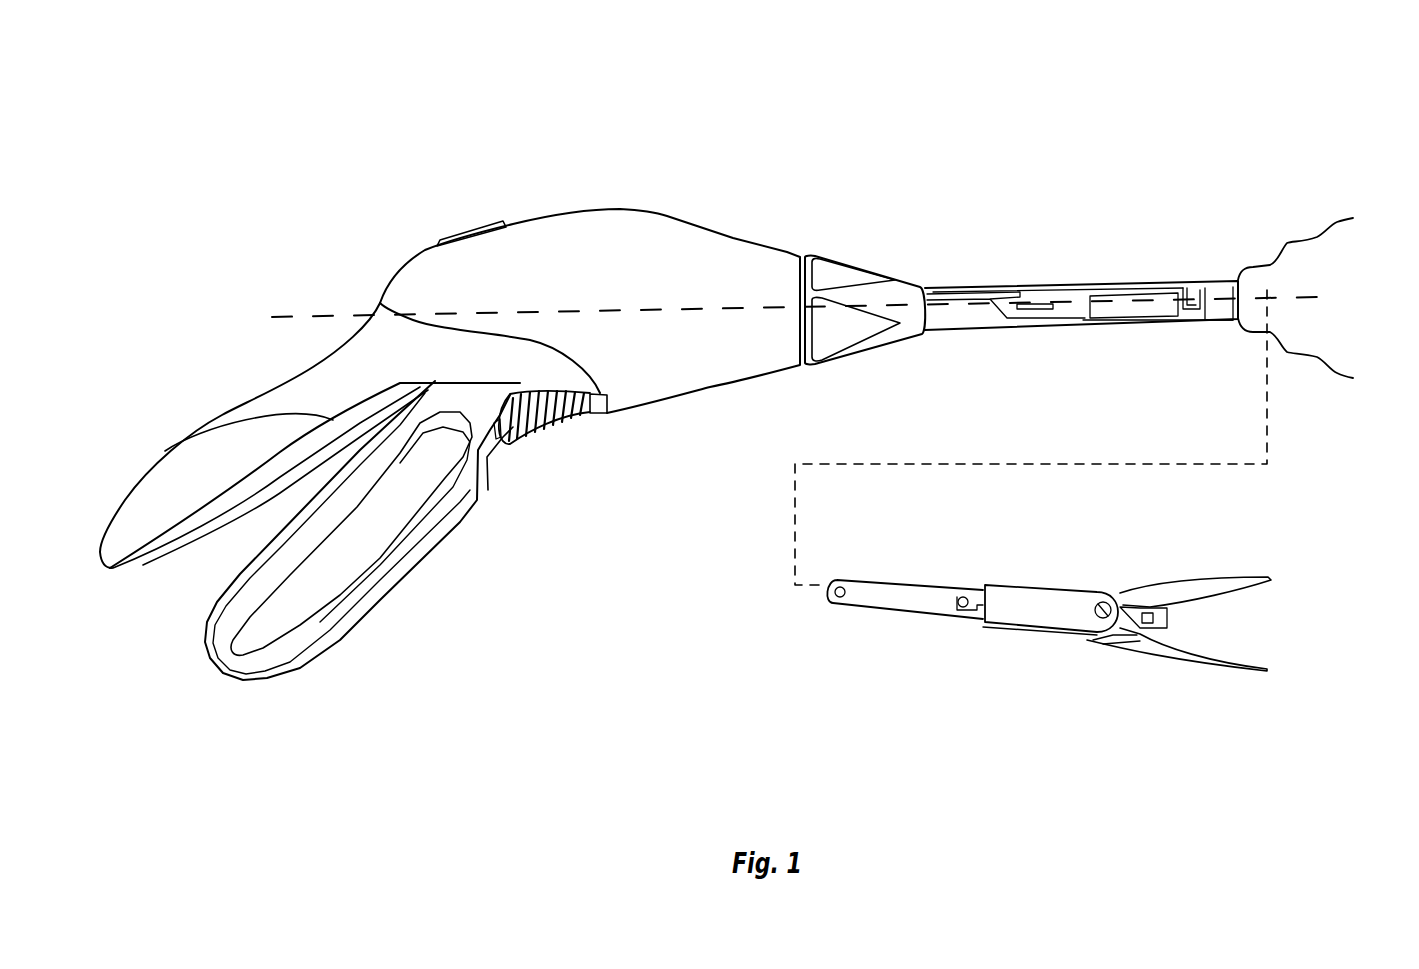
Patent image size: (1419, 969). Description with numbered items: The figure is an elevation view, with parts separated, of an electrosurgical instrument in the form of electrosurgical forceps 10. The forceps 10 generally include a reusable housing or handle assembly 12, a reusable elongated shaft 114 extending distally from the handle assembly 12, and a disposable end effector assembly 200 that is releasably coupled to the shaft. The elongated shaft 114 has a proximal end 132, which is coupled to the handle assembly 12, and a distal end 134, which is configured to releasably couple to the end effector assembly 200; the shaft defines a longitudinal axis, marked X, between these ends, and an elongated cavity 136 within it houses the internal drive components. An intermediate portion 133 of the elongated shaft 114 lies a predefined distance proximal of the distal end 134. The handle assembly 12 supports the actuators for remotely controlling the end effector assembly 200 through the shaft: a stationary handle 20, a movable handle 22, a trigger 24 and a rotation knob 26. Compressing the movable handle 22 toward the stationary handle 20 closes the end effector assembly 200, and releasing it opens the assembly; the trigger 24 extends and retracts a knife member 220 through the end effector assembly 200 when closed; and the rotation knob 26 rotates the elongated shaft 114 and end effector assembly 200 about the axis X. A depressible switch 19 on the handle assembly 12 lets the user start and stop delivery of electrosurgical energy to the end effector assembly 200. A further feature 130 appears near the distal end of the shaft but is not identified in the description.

The electrosurgical forceps 10 is at (757, 184).
The handle assembly 12 is at (392, 258).
The depressible switch 19 is at (469, 228).
The stationary handle 20 is at (222, 415).
The movable handle 22 is at (398, 578).
The trigger 24 is at (540, 430).
The rotation knob 26 is at (852, 265).
The elongated shaft 114 is at (968, 278).
The tissue 130 is at (1283, 247).
The proximal end 132 is at (938, 292).
The intermediate portion 133 is at (1077, 328).
The distal end 134 is at (1198, 292).
The elongated cavity 136 is at (1134, 277).
The end effector assembly 200 is at (1036, 573).
The knife member 220 is at (905, 603).